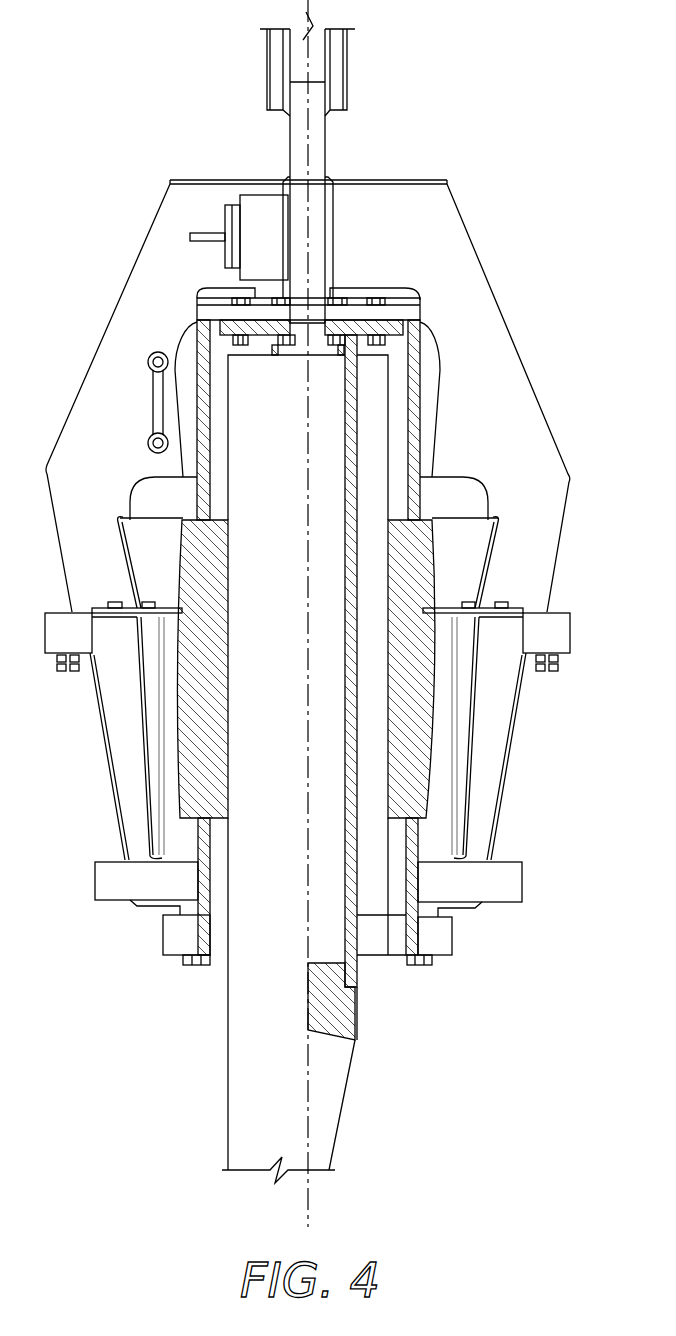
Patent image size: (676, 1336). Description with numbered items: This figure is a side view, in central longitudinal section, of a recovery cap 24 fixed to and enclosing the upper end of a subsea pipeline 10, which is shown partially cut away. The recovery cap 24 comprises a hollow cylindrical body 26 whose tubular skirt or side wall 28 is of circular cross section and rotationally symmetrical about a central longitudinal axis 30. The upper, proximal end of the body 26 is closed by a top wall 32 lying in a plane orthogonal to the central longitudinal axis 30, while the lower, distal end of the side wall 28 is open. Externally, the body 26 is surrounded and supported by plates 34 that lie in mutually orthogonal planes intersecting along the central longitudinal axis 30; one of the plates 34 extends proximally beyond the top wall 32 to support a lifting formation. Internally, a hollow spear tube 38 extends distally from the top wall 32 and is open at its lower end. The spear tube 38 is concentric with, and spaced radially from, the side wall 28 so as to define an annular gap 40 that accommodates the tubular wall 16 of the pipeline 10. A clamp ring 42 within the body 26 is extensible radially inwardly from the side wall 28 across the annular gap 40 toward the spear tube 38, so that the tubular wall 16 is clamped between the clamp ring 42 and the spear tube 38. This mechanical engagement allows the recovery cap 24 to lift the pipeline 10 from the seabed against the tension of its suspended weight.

The subsea pipeline 10 is at (192, 1013).
The tubular wall 16 is at (238, 1100).
The recovery cap 24 is at (106, 214).
The hollow cylindrical body 26 is at (446, 419).
The side wall 28 is at (415, 450).
The central longitudinal axis 30 is at (305, 152).
The top wall 32 is at (352, 305).
The plates 34 is at (110, 330).
The spear tube 38 is at (352, 980).
The annular gap 40 is at (388, 362).
The clamp ring 42 is at (220, 593).